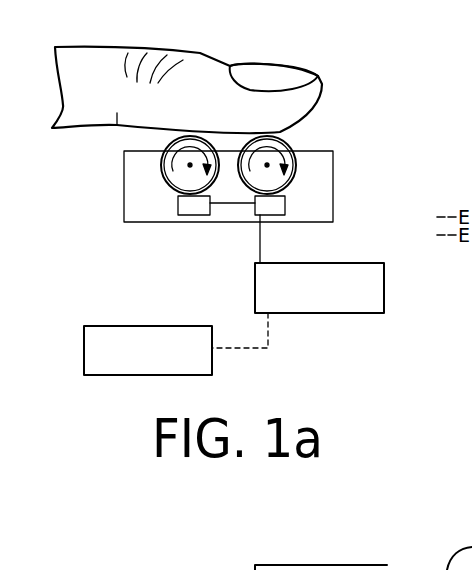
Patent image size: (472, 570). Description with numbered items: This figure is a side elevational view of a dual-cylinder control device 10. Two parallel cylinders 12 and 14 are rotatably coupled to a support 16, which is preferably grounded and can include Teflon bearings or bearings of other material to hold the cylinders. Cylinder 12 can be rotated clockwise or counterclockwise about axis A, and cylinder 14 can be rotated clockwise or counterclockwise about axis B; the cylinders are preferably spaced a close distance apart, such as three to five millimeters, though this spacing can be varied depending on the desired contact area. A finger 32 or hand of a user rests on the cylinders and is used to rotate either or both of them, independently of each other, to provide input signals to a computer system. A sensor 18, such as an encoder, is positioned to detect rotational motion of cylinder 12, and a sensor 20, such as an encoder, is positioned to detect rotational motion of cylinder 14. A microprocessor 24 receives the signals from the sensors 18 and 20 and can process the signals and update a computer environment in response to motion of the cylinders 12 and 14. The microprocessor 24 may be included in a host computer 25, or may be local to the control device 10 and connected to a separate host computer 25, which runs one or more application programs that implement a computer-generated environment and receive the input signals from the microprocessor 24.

The dual-cylinder control device 10 is at (333, 43).
The cylinder 12 is at (172, 173).
The cylinder 14 is at (290, 147).
The support 16 is at (142, 218).
The sensor 18 is at (190, 212).
The sensor 20 is at (282, 207).
The microprocessor 24 is at (328, 313).
The host computer 25 is at (107, 330).
The finger 32 is at (205, 72).
The axis A is at (190, 167).
The axis B is at (267, 167).